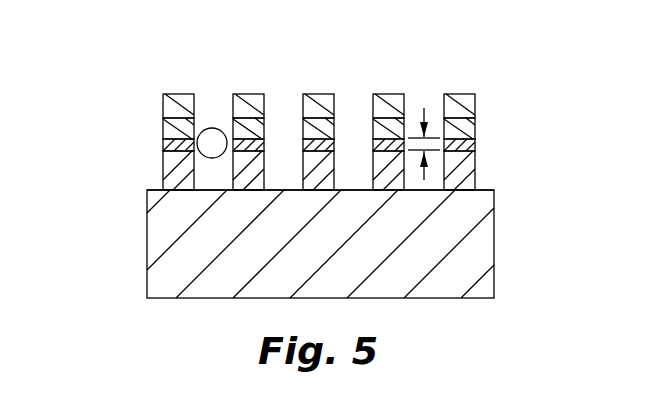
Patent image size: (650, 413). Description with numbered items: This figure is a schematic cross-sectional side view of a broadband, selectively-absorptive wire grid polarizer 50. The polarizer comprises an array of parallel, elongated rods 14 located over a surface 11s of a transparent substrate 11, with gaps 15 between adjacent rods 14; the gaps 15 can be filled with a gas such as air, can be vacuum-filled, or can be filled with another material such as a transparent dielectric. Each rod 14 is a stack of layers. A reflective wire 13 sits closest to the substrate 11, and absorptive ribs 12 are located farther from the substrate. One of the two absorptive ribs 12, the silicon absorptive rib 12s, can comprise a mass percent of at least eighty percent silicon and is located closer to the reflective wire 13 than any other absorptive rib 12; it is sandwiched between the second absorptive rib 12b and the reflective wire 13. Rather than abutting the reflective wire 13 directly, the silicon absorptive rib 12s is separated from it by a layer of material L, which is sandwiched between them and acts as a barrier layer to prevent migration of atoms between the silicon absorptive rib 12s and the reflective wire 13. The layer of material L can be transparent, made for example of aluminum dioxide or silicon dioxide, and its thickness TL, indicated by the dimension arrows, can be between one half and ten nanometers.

The selectively-absorptive wire grid polarizer 50 is at (92, 240).
The transparent substrate 11 is at (327, 258).
The surface 11s is at (158, 191).
The rod 14 is at (248, 65).
The absorptive rib 12 is at (332, 131).
The second absorptive rib 12b is at (490, 108).
The silicon absorptive rib 12s is at (146, 128).
The reflective wire 13 is at (136, 173).
The layer of material L is at (490, 145).
The thin layer thickness TL is at (424, 132).
The gap 15 is at (212, 143).